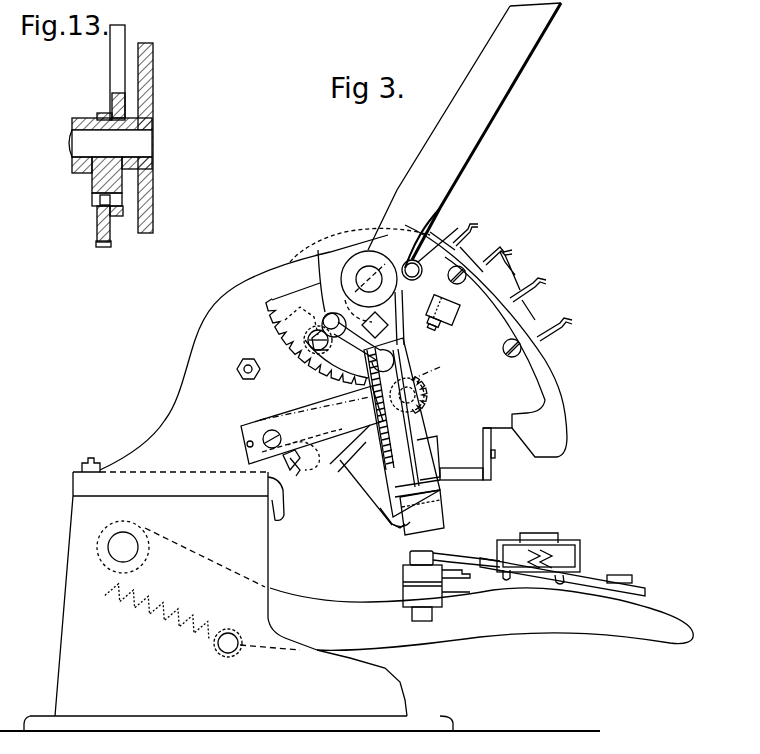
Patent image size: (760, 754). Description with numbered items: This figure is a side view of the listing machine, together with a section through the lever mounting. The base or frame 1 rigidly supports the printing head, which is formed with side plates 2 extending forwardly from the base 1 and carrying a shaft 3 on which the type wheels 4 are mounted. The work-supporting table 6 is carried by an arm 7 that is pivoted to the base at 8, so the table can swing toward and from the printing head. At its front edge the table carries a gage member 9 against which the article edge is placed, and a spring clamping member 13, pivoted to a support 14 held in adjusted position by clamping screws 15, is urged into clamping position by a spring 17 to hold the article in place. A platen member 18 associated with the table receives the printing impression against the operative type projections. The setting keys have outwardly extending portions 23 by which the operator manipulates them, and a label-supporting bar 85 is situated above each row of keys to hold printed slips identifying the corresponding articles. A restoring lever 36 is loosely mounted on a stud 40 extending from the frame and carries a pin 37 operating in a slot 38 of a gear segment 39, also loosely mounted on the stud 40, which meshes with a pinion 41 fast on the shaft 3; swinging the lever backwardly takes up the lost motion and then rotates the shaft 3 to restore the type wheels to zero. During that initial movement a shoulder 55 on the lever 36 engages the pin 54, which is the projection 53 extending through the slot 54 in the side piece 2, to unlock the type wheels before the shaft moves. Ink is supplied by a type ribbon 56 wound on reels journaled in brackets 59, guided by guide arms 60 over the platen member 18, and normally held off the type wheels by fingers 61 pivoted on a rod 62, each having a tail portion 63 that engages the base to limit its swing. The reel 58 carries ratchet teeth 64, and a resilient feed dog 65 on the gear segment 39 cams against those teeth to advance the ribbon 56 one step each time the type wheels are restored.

In FIG. 3, the base or frame 1 is at (85, 628).
In FIG. 13, the side plates 2 is at (153, 97).
In FIG. 3, the side plates 2 is at (515, 386).
In FIG. 3, the shaft 3 is at (418, 372).
In FIG. 3, the type wheels 4 is at (433, 478).
In FIG. 3, the table 6 is at (585, 577).
In FIG. 3, the arm 7 is at (393, 636).
In FIG. 3, the pivot 8 is at (441, 367).
In FIG. 3, the gage member 9 is at (622, 577).
In FIG. 3, the spring clamping member 13 is at (308, 350).
In FIG. 3, the support 14 is at (545, 570).
In FIG. 3, the clamping screws 15 is at (505, 578).
In FIG. 3, the spring 17 is at (497, 562).
In FIG. 3, the platen member 18 is at (410, 558).
In FIG. 3, the outwardly extending portion 23 is at (567, 320).
In FIG. 13, the restoring lever 36 is at (112, 72).
In FIG. 3, the restoring lever 36 is at (473, 131).
In FIG. 13, the pin 37 is at (102, 202).
In FIG. 3, the pin 37 is at (323, 314).
In FIG. 13, the slot 38 is at (100, 215).
In FIG. 3, the slot 38 is at (336, 314).
In FIG. 13, the gear segment 39 is at (112, 232).
In FIG. 3, the gear segment 39 is at (297, 300).
In FIG. 13, the stud 40 is at (72, 140).
In FIG. 3, the stud 40 is at (368, 277).
In FIG. 3, the pinion 41 is at (427, 391).
In FIG. 3, the projection 53 is at (448, 245).
In FIG. 3, the slot 54 is at (420, 268).
In FIG. 3, the shoulder 55 is at (400, 283).
In FIG. 3, the type ribbon 56 is at (430, 508).
In FIG. 3, the reel 58 is at (400, 422).
In FIG. 3, the brackets 59 is at (348, 470).
In FIG. 3, the guide arms 60 is at (397, 528).
In FIG. 3, the fingers 61 is at (404, 530).
In FIG. 3, the rod 62 is at (300, 470).
In FIG. 3, the tail portion 63 is at (272, 508).
In FIG. 3, the ratchet teeth 64 is at (372, 408).
In FIG. 3, the feed dog 65 is at (350, 378).
In FIG. 3, the label-supporting bar 85 is at (489, 263).